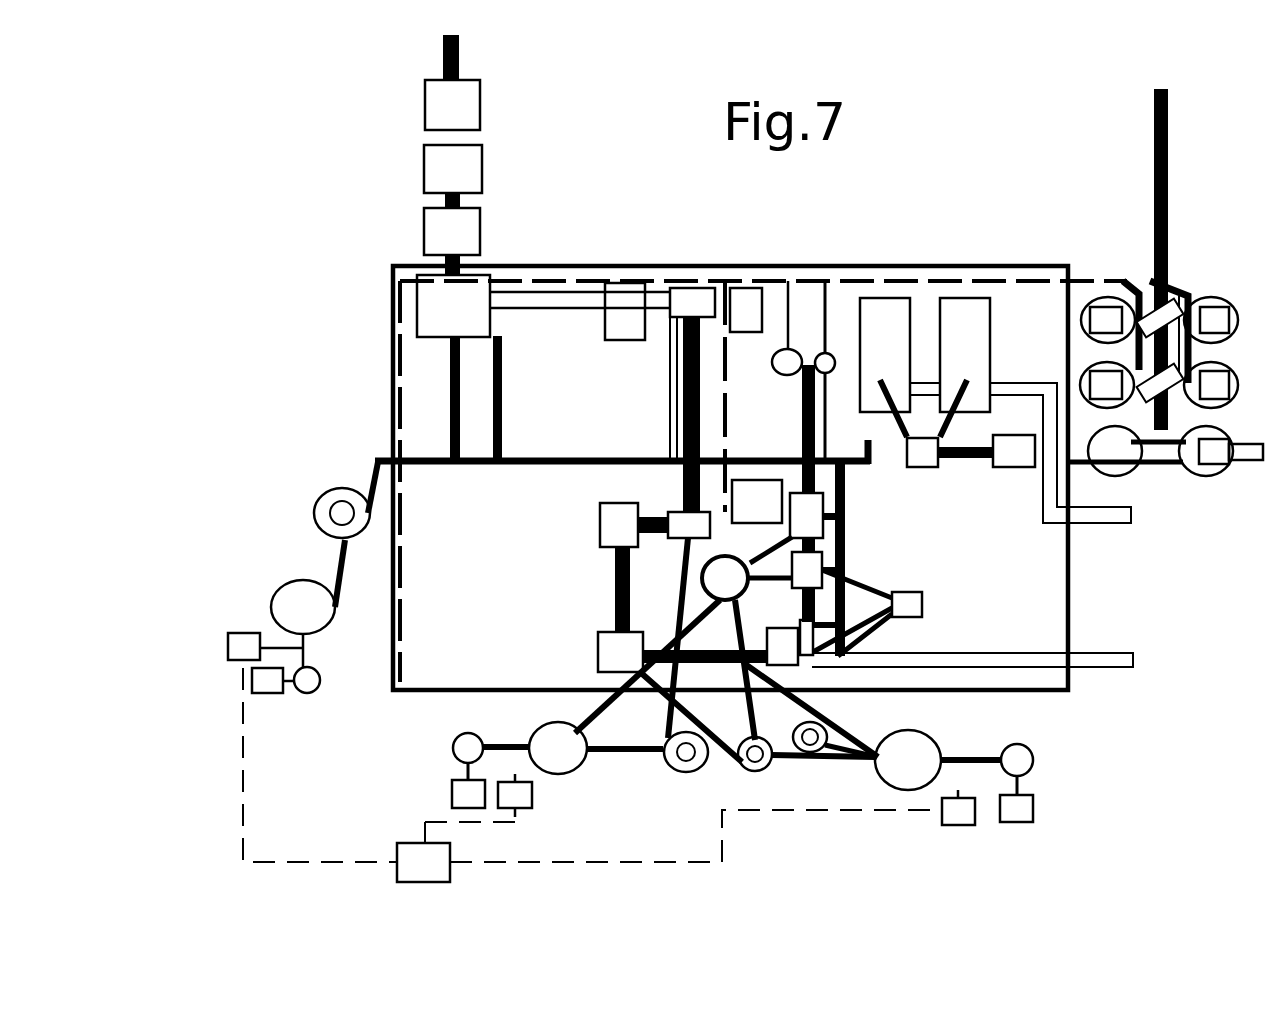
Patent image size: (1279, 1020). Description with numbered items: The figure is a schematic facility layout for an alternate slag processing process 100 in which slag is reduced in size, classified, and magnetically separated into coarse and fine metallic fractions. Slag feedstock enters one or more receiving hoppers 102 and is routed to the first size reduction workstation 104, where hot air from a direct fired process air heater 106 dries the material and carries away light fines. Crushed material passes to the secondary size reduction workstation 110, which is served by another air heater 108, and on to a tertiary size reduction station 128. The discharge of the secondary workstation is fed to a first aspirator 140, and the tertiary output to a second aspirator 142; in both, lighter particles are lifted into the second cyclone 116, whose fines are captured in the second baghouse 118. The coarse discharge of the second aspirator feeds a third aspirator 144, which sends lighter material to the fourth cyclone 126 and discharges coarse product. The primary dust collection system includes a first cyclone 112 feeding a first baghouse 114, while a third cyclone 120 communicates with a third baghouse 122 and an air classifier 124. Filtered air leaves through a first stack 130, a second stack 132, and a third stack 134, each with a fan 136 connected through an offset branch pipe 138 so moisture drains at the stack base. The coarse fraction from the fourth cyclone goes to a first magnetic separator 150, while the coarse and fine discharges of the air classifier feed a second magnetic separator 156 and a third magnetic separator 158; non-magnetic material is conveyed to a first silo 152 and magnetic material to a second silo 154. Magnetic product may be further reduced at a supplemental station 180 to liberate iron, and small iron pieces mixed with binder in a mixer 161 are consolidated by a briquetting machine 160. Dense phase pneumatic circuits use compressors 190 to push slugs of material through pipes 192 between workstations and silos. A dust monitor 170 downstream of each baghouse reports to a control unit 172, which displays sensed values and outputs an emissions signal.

The process 100 is at (1034, 98).
The receiving hoppers 102 is at (470, 104).
The first size reduction workstation 104 is at (474, 306).
The direct fired process air heater 106 is at (620, 298).
The air heater 108 is at (745, 300).
The secondary size reduction workstation 110 is at (693, 304).
The first cyclone 112 is at (342, 493).
The first baghouse 114 is at (283, 597).
The second cyclone 116 is at (676, 764).
The second baghouse 118 is at (555, 773).
The third cyclone 120 is at (748, 768).
The third baghouse 122 is at (892, 773).
The air classifier 124 is at (713, 592).
The fourth cyclone 126 is at (790, 752).
The tertiary size reduction station 128 is at (612, 530).
The first stack 130 is at (310, 687).
The second stack 132 is at (453, 740).
The third stack 134 is at (1033, 758).
The fan 136 is at (245, 684).
The offset branch pipe 138 is at (290, 688).
The first aspirator 140 is at (825, 355).
The second aspirator 142 is at (612, 660).
The third aspirator 144 is at (782, 660).
The first magnetic separator 150 is at (806, 655).
The first silo 152 is at (1097, 367).
The second silo 154 is at (1129, 467).
The second magnetic separator 156 is at (822, 570).
The third magnetic separator 158 is at (824, 531).
The briquetting machine 160 is at (885, 338).
The mixer 161 is at (921, 456).
The dust monitor 170 is at (236, 640).
The control unit 172 is at (450, 870).
The supplemental station 180 is at (905, 595).
The compressor 190 is at (777, 365).
The pipes 192 is at (1012, 279).